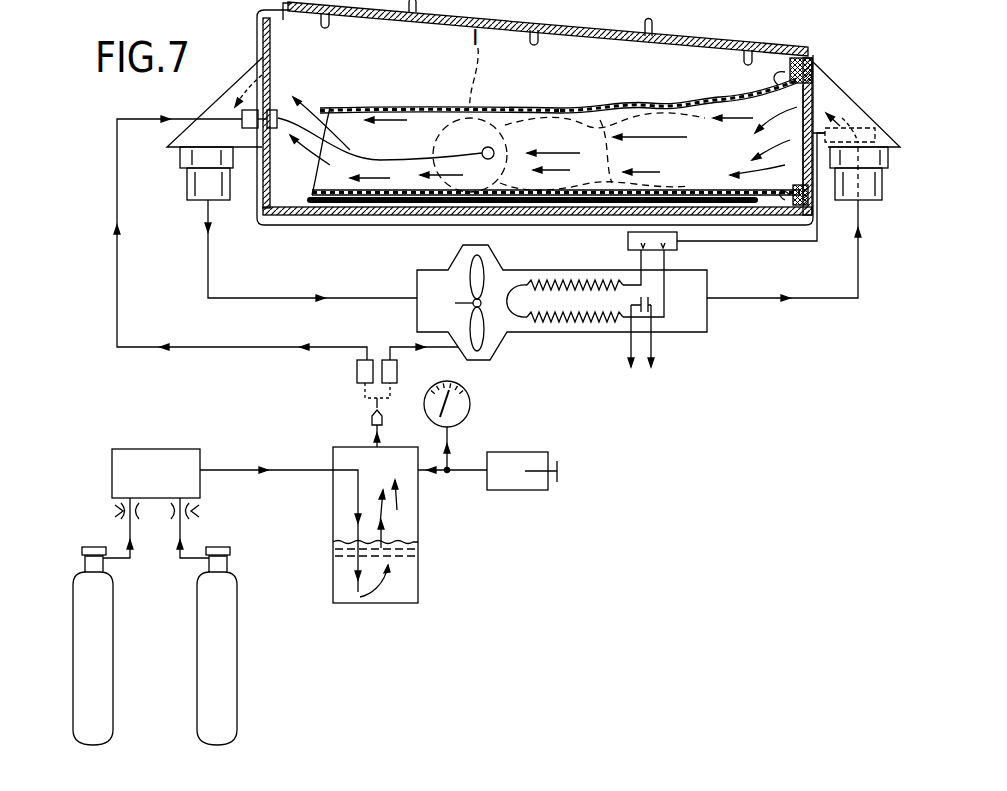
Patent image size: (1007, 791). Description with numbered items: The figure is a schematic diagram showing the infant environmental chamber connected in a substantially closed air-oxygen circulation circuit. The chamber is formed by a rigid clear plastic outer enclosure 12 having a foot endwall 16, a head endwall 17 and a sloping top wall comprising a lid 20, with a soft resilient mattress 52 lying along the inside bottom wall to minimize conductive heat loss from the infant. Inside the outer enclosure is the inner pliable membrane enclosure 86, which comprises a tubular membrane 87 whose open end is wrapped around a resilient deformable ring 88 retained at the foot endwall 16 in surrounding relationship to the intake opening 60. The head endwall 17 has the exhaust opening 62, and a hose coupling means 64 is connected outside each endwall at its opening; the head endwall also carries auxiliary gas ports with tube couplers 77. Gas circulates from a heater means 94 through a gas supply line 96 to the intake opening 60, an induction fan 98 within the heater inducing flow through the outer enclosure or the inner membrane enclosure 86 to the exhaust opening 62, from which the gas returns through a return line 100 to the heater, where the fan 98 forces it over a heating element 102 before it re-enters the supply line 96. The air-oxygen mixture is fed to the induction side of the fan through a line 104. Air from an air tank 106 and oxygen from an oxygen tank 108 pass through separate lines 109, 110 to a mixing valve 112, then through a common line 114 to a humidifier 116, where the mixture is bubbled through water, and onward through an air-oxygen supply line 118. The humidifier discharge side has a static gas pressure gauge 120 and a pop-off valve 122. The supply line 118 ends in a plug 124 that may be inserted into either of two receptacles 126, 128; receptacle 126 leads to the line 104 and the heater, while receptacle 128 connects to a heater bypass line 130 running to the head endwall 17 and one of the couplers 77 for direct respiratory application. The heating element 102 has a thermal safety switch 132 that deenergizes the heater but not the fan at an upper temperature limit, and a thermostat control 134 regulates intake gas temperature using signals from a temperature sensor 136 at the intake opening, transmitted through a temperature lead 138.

The outer enclosure 12 is at (812, 48).
The foot endwall 16 is at (807, 80).
The head endwall 17 is at (262, 30).
The lid 20 is at (668, 32).
The mattress 52 is at (453, 203).
The intake opening 60 is at (815, 99).
The exhaust opening 62 is at (263, 64).
The hose coupling means 64 is at (172, 160).
The tube coupler 77 is at (234, 110).
The inner pliable membrane enclosure 86 is at (560, 126).
The tubular membrane 87 is at (416, 107).
The resilient deformable ring 88 is at (813, 62).
The heater means 94 is at (581, 308).
The gas supply line 96 is at (858, 265).
The induction fan 98 is at (478, 275).
The return line 100 is at (207, 254).
The heating element 102 is at (565, 320).
The line 104 is at (390, 347).
The air tank 106 is at (73, 588).
The oxygen tank 108 is at (237, 597).
The air line 109 is at (182, 533).
The oxygen line 110 is at (130, 528).
The mixing valve 112 is at (112, 477).
The common line 114 is at (230, 470).
The humidifier 116 is at (418, 508).
The air-oxygen supply line 118 is at (372, 436).
The static gas pressure gauge 120 is at (470, 404).
The pop-off valve 122 is at (517, 490).
The plug 124 is at (370, 419).
The receptacle 126 is at (397, 368).
The receptacle 128 is at (357, 370).
The heater bypass line 130 is at (115, 147).
The thermal safety switch 132 is at (650, 303).
The thermostat control 134 is at (628, 241).
The temperature sensor 136 is at (875, 128).
The temperature lead 138 is at (760, 242).